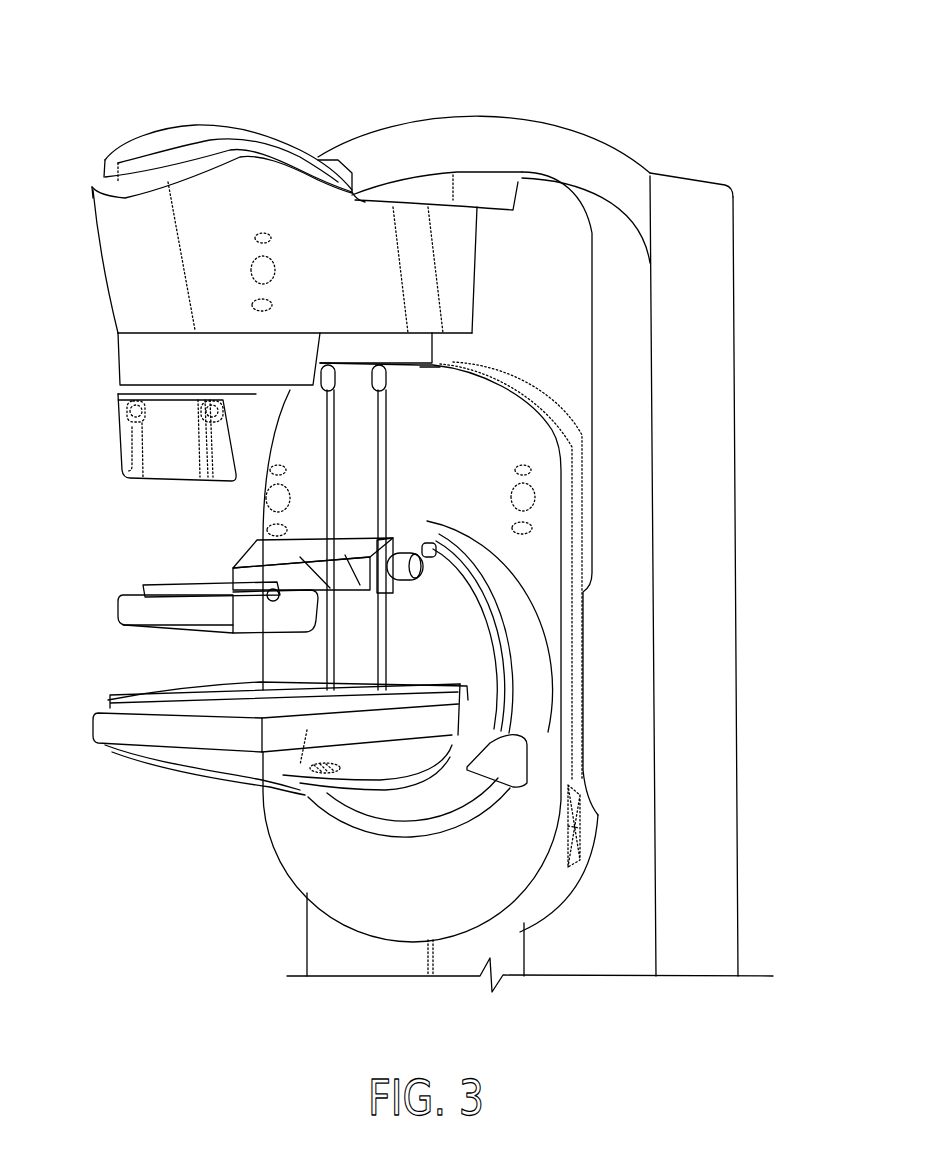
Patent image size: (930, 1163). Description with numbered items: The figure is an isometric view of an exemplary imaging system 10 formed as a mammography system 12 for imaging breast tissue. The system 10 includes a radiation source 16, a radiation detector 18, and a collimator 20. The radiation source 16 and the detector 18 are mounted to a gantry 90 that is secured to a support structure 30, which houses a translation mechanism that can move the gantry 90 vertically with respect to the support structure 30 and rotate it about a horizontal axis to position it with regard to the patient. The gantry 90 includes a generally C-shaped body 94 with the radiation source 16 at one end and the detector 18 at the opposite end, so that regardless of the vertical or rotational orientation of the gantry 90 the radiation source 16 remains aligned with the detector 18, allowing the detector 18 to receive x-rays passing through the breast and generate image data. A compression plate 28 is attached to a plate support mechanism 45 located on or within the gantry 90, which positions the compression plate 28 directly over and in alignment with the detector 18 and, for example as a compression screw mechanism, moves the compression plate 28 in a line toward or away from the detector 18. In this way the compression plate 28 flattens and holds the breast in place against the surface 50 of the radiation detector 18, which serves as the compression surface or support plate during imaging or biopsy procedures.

The imaging system 10 is at (502, 56).
The mammography system 12 is at (136, 123).
The radiation source 16 is at (93, 237).
The radiation detector 18 is at (140, 766).
The collimator 20 is at (117, 445).
The compression plate 28 is at (313, 613).
The support structure 30 is at (736, 408).
The plate support mechanism 45 is at (398, 520).
The surface 50 is at (262, 753).
The gantry 90 is at (528, 180).
The C-shaped body 94 is at (565, 382).